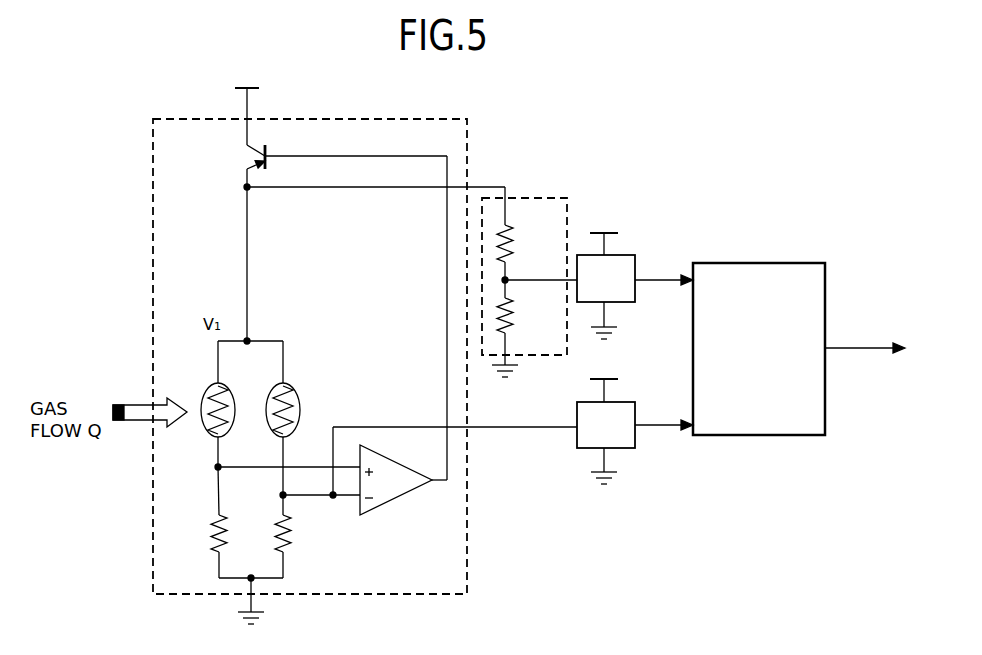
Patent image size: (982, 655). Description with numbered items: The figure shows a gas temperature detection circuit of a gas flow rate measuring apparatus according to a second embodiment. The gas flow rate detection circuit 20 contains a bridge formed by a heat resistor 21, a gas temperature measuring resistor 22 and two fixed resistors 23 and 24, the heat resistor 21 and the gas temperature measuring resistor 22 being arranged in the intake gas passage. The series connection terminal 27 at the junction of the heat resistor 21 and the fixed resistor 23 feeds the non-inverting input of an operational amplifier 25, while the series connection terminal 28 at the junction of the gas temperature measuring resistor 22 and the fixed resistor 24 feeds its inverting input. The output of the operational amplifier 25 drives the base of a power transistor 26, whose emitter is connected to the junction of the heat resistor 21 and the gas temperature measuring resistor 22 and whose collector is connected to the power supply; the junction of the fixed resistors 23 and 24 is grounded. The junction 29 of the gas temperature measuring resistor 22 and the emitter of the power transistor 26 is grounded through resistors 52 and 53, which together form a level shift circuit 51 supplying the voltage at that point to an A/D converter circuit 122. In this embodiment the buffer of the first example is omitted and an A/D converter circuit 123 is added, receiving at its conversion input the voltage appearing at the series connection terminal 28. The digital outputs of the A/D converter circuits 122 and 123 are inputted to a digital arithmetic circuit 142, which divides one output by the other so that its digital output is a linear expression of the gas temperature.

The gas flow rate detection circuit 20 is at (173, 119).
The heat resistor 21 is at (207, 391).
The gas temperature measuring resistor 22 is at (271, 387).
The fixed resistor 23 is at (212, 532).
The fixed resistor 24 is at (295, 532).
The operational amplifier 25 is at (403, 497).
The power transistor 26 is at (268, 150).
The series connection terminal 27 is at (218, 467).
The series connection terminal 28 is at (288, 498).
The junction 29 is at (249, 189).
The level shift circuit 51 is at (540, 198).
The resistor 52 is at (520, 237).
The resistor 53 is at (523, 312).
The A/D converter circuit 122 is at (625, 255).
The A/D converter circuit 123 is at (577, 440).
The digital arithmetic circuit 142 is at (755, 436).